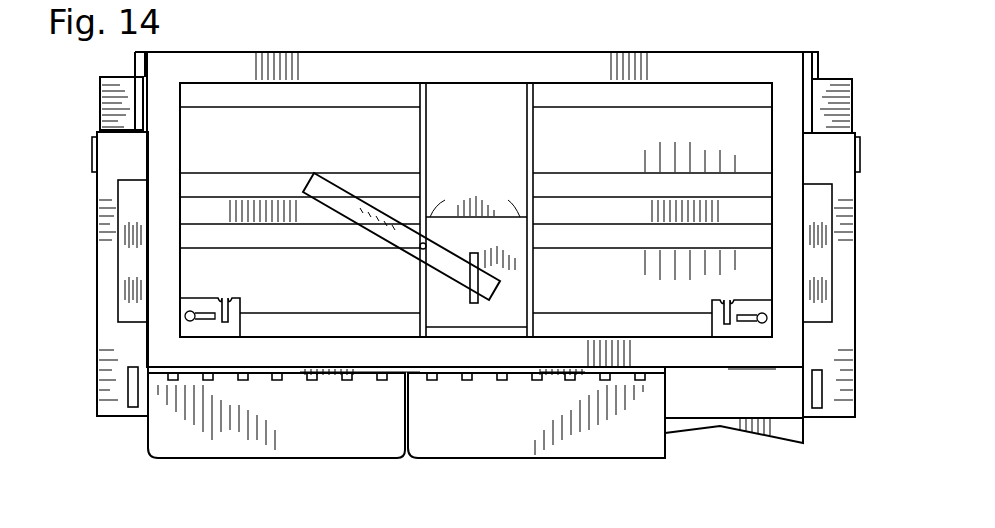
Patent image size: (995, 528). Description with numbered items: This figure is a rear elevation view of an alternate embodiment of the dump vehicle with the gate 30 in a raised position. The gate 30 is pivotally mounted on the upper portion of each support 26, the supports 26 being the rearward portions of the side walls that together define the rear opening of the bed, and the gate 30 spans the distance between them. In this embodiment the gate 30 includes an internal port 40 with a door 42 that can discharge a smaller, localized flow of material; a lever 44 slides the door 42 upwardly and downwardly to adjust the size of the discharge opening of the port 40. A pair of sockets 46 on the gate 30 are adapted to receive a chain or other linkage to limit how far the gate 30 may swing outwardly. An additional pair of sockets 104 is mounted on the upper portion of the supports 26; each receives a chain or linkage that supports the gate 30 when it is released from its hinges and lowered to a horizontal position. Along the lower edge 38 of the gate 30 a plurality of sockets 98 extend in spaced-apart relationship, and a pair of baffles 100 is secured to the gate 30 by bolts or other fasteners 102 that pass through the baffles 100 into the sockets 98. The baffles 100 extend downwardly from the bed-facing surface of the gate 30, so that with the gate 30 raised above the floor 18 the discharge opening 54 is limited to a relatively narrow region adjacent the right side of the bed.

The gate 30 is at (313, 50).
The socket 104 is at (92, 152).
The support 26 is at (95, 278).
The lever 44 is at (330, 188).
The door 42 is at (432, 214).
The internal port 40 is at (521, 214).
The socket 46 is at (196, 298).
The lower edge 38 is at (690, 376).
The baffle 100 is at (358, 416).
The fastener 102 is at (467, 382).
The discharge opening 54 is at (727, 407).
The socket 98 is at (762, 371).
The floor 18 is at (680, 408).